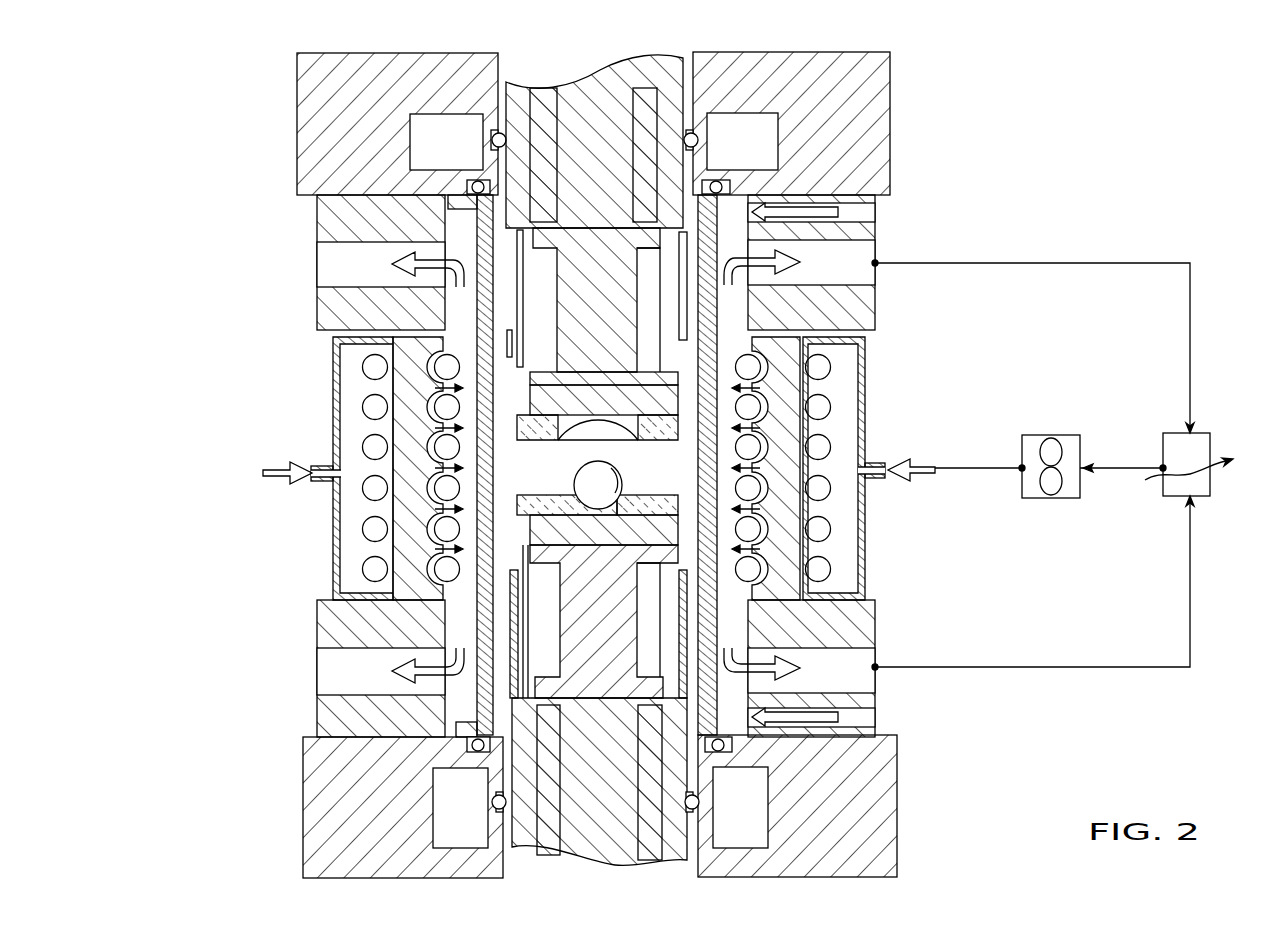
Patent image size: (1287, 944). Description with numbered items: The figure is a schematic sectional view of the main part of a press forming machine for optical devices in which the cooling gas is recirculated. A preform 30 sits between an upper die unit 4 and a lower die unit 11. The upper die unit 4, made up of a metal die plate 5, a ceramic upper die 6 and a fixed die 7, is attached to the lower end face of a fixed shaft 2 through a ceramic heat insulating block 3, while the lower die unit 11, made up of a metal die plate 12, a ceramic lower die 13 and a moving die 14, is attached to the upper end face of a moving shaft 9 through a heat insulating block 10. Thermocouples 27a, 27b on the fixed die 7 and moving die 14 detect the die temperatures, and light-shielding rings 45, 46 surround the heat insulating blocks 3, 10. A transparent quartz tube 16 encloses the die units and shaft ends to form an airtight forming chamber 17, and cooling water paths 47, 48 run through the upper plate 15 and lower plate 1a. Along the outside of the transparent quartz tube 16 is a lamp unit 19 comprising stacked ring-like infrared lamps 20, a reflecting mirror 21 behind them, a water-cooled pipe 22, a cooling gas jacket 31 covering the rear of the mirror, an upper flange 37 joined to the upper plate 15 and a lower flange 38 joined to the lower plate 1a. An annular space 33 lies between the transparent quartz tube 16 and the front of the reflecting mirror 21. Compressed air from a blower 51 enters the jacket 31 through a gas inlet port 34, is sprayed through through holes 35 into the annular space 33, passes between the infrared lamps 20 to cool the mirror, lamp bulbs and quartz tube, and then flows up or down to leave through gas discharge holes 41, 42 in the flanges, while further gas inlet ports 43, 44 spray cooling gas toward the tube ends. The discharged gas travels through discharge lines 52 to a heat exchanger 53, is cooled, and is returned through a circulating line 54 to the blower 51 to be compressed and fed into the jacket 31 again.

The lower plate 1a is at (897, 797).
The fixed shaft 2 is at (570, 92).
The heat insulating block 3 is at (640, 343).
The upper die unit 4 is at (685, 415).
The die plate 5 is at (517, 398).
The upper die 6 is at (525, 370).
The fixed die 7 is at (533, 438).
The moving shaft 9 is at (580, 840).
The heat insulating block 10 is at (661, 584).
The lower die unit 11 is at (508, 515).
The die plate 12 is at (658, 538).
The lower die 13 is at (643, 500).
The moving die 14 is at (550, 498).
The upper plate 15 is at (882, 94).
The transparent quartz tube 16 is at (477, 303).
The forming chamber 17 is at (502, 528).
The lamp unit 19 is at (325, 416).
The infrared lamps 20 is at (437, 388).
The reflecting mirror 21 is at (420, 413).
The water-cooled pipe 22 is at (367, 490).
The thermocouple 27a is at (445, 363).
The thermocouple 27b is at (445, 570).
The preform 30 is at (606, 464).
The cooling gas jacket 31 is at (843, 401).
The annular space 33 is at (733, 344).
The gas inlet port 34 is at (878, 484).
The through holes 35 is at (775, 432).
The upper flange 37 is at (876, 294).
The lower flange 38 is at (876, 620).
The gas discharge hole 41 is at (865, 248).
The gas discharge hole 42 is at (870, 680).
The gas inlet port 43 is at (865, 211).
The gas inlet port 44 is at (878, 716).
The light-shielding ring 45 is at (661, 272).
The light-shielding ring 46 is at (664, 680).
The cooling water path 47 is at (773, 146).
The cooling water path 48 is at (760, 834).
The blower 51 is at (1053, 500).
The discharge lines 52 is at (1070, 265).
The heat exchanger 53 is at (1212, 480).
The circulating line 54 is at (1114, 466).